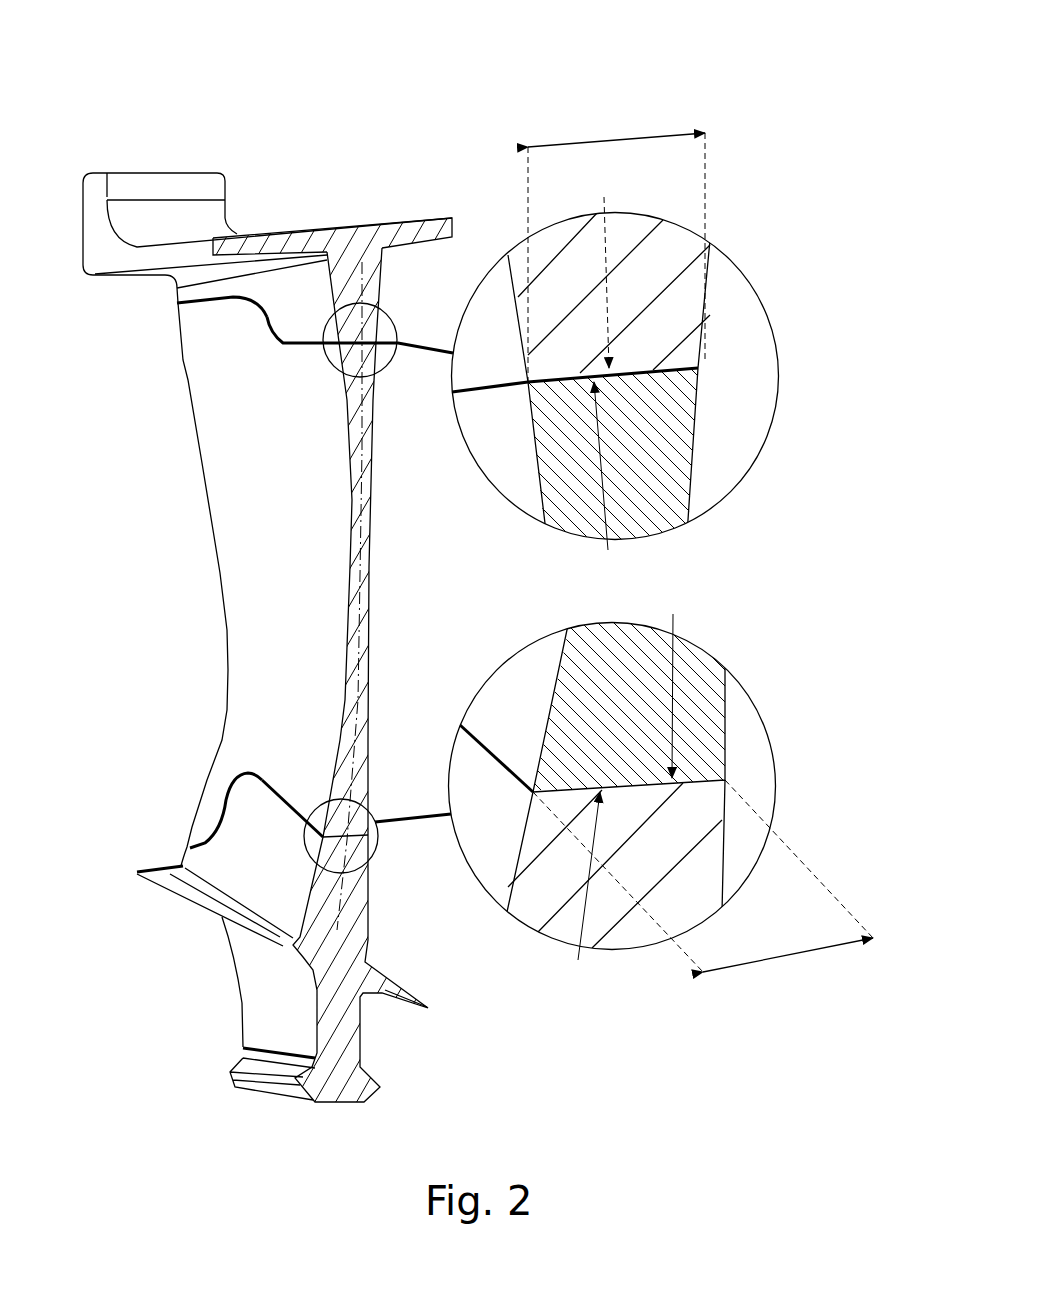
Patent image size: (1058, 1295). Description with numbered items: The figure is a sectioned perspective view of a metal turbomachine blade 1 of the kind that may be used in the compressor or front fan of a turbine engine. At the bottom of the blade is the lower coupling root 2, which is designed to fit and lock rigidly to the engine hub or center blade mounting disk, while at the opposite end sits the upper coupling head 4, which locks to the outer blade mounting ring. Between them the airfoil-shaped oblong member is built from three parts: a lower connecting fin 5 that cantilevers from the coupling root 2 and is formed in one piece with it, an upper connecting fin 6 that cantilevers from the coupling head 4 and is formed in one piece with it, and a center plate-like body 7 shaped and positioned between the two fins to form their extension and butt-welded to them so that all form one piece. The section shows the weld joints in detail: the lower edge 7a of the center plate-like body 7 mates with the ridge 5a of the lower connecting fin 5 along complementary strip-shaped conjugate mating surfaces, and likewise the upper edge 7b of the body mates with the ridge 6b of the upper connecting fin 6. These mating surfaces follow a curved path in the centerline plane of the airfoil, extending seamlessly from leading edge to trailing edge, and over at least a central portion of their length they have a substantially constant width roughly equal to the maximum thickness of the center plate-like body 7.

The turbomachine blade 1 is at (447, 173).
The lower coupling root 2 is at (247, 1073).
The upper coupling head 4 is at (266, 228).
The lower connecting fin 5 is at (240, 858).
The ridge of lower connecting fin 5a is at (240, 771).
The upper connecting fin 6 is at (230, 290).
The ridge of upper connecting fin 6b is at (278, 352).
The center plate-like body 7 is at (247, 565).
The lower edge of center plate-like body 7a is at (282, 807).
The upper edge of center plate-like body 7b is at (270, 314).